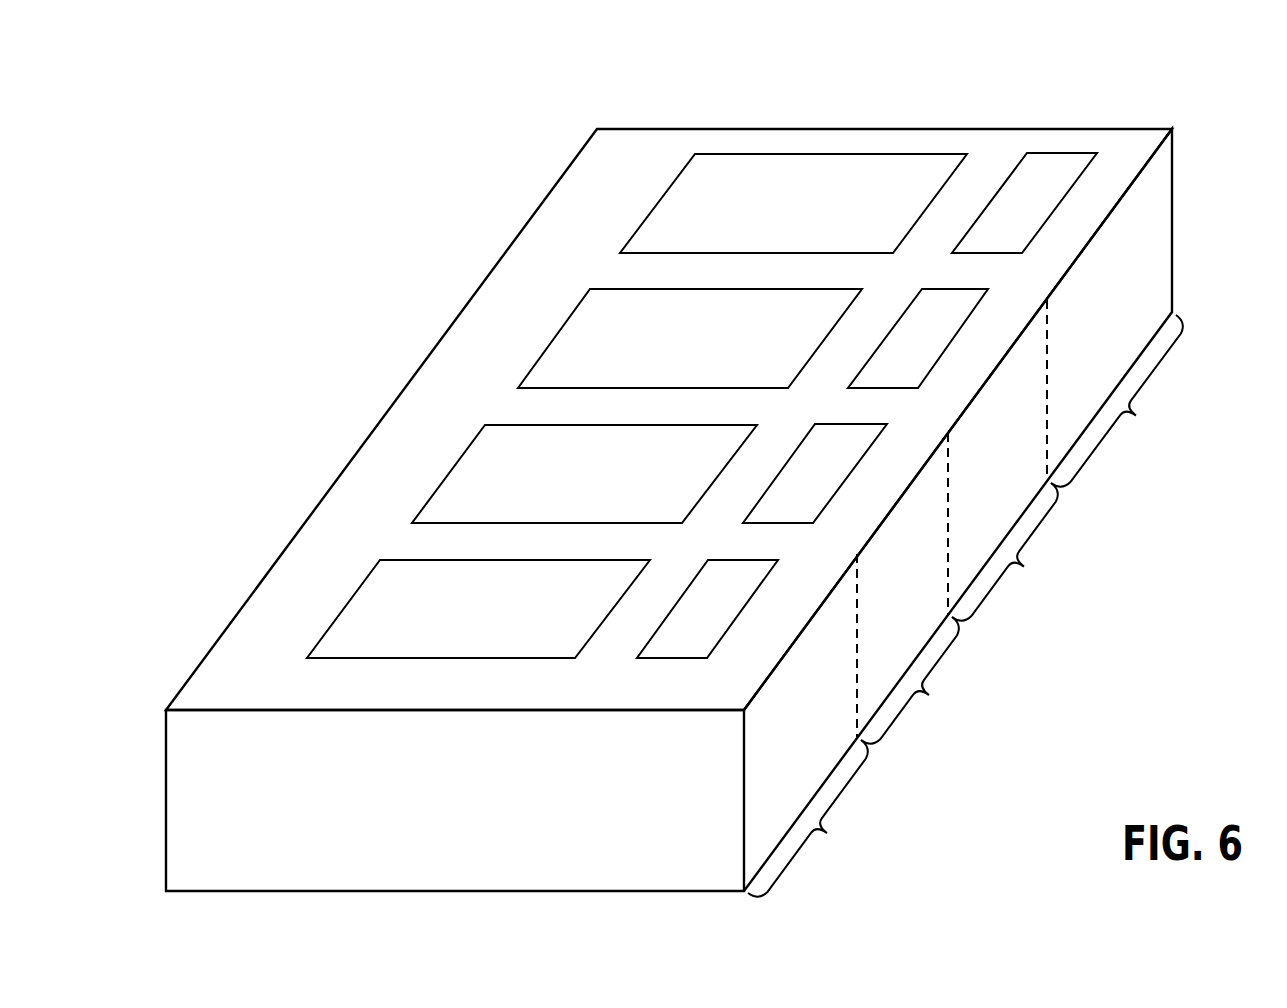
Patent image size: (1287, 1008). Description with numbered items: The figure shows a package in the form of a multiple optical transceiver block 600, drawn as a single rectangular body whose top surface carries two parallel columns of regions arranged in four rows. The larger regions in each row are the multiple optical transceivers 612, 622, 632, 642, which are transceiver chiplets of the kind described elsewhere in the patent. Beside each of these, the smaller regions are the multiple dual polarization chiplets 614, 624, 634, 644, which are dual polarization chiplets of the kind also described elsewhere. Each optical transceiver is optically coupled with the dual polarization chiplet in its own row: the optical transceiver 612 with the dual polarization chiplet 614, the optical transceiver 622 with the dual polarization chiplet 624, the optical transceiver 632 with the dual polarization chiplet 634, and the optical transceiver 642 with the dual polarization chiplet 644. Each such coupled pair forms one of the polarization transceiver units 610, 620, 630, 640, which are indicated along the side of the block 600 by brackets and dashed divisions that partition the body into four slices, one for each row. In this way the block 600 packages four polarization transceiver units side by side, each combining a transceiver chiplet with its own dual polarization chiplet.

The multiple optical transceiver block 600 is at (1141, 68).
The polarization transceiver unit 610 is at (809, 818).
The optical transceiver 612 is at (362, 608).
The dual polarization chiplet 614 is at (733, 607).
The polarization transceiver unit 620 is at (913, 680).
The optical transceiver 622 is at (472, 475).
The dual polarization chiplet 624 is at (833, 480).
The polarization transceiver unit 630 is at (1006, 552).
The optical transceiver 632 is at (568, 337).
The dual polarization chiplet 634 is at (942, 330).
The polarization transceiver unit 640 is at (1117, 401).
The optical transceiver 642 is at (685, 198).
The dual polarization chiplet 644 is at (1037, 198).